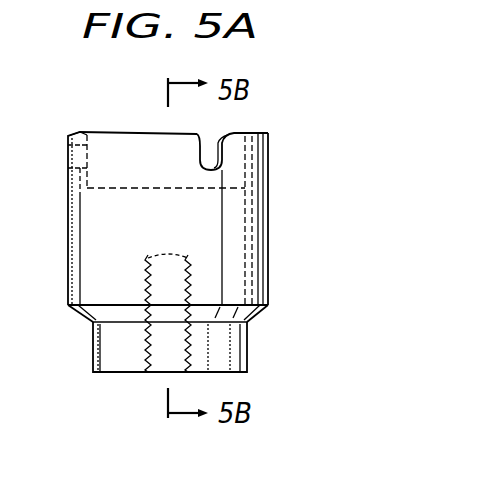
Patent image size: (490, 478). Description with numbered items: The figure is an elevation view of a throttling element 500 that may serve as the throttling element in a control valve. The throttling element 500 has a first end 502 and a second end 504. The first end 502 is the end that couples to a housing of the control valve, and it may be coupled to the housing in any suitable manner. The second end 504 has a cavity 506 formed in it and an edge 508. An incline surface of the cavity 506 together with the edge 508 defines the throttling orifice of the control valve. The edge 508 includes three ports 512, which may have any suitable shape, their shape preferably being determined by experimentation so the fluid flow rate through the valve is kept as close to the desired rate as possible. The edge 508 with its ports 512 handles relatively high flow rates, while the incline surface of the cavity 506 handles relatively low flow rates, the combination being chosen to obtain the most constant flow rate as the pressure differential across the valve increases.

The throttling element 500 is at (211, 233).
The first end 502 is at (263, 360).
The second end 504 is at (194, 189).
The cavity 506 is at (121, 163).
The edge 508 is at (87, 133).
The ports 512 is at (210, 138).